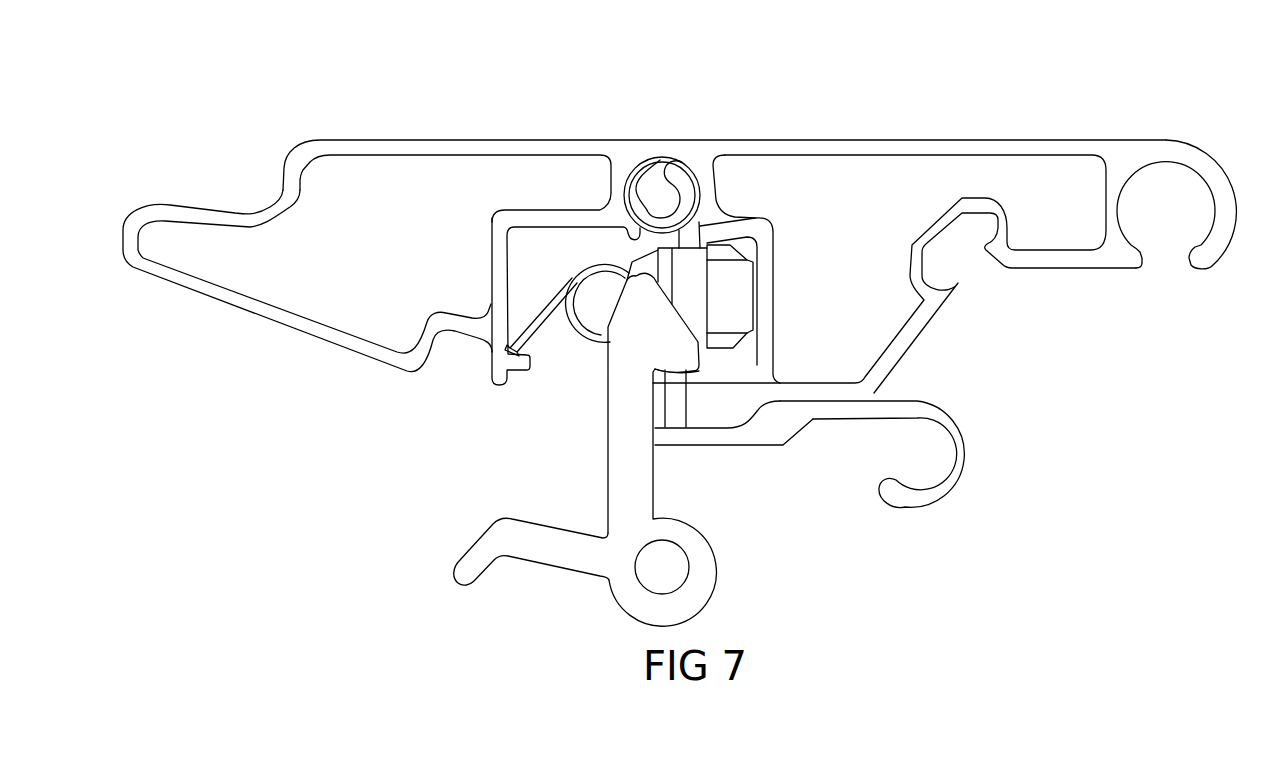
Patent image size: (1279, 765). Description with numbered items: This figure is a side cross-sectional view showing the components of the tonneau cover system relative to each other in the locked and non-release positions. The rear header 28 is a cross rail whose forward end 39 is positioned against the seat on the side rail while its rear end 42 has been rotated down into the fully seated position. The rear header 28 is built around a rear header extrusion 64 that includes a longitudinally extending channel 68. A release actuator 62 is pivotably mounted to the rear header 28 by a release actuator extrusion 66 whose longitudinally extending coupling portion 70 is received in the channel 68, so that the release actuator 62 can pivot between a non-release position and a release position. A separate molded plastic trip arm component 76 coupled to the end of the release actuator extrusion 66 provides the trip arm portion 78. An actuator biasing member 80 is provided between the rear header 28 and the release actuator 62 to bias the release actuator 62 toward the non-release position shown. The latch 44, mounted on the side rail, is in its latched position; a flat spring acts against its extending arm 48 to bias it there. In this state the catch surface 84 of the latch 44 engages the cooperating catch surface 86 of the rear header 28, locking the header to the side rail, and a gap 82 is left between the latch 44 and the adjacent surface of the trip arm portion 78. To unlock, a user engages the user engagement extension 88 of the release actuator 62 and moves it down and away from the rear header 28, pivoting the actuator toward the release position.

The rear header 28 is at (885, 111).
The forward end 39 is at (128, 230).
The rear end 42 is at (1222, 196).
The latch 44 is at (568, 457).
The extending arm 48 is at (555, 553).
The release actuator 62 is at (714, 240).
The rear header extrusion 64 is at (975, 150).
The release actuator extrusion 66 is at (755, 440).
The channel 68 is at (653, 172).
The coupling portion 70 is at (685, 180).
The molded plastic trip arm component 76 is at (750, 360).
The trip arm portion 78 is at (740, 300).
The actuator biasing member 80 is at (600, 270).
The gap 82 is at (700, 360).
The catch surface 84 is at (668, 376).
The cooperating catch surface 86 is at (672, 396).
The user engagement extension 88 is at (905, 412).